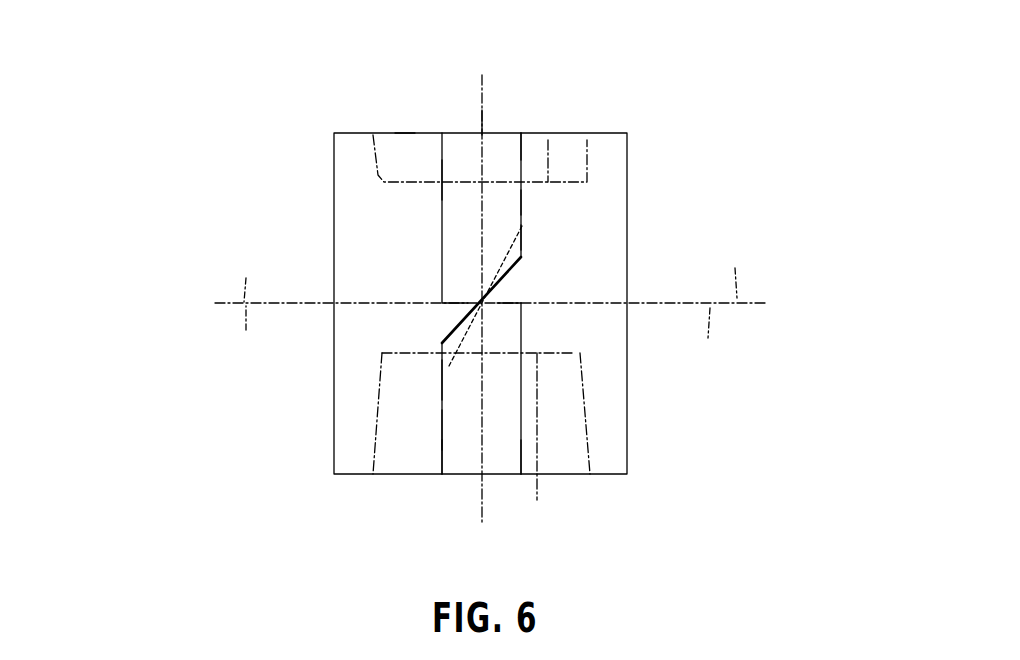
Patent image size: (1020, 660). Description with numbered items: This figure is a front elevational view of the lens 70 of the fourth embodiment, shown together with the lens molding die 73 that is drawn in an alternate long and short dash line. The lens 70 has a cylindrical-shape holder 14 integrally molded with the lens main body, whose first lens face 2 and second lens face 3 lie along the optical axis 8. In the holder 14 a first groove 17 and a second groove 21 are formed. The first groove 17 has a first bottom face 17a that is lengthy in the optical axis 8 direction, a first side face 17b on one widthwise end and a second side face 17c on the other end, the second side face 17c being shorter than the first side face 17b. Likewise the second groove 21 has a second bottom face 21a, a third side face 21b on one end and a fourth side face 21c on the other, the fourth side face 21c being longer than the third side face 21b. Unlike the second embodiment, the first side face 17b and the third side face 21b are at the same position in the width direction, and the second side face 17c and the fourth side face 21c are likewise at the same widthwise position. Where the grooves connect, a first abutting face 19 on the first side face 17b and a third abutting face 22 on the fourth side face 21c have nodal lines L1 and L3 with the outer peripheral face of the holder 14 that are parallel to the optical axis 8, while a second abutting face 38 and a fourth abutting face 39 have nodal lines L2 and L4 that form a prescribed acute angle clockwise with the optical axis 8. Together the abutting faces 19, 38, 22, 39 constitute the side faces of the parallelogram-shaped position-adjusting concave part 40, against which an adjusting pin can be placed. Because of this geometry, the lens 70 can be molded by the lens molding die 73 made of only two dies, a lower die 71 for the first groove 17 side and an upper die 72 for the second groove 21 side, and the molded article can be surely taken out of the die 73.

The lens 70 is at (317, 133).
The lens molding die 73 is at (222, 265).
The upper die 72 is at (480, 310).
The lower die 71 is at (494, 300).
The first groove 17 is at (489, 150).
The first bottom face 17a is at (511, 150).
The first side face 17b is at (522, 208).
The second side face 17c is at (443, 191).
The second groove 21 is at (462, 462).
The second bottom face 21a is at (442, 460).
The third side face 21b is at (521, 457).
The fourth side face 21c is at (443, 436).
The holder 14 is at (405, 133).
The optical axis 8 is at (479, 124).
The first lens face 2 is at (548, 126).
The second lens face 3 is at (540, 440).
The first abutting face 19 is at (522, 244).
The third abutting face 22 is at (443, 386).
The second abutting face 38 is at (522, 268).
The fourth abutting face 39 is at (442, 333).
The position-adjusting concave part 40 is at (503, 254).
The nodal line L1 is at (522, 255).
The nodal line L2 is at (500, 291).
The nodal line L3 is at (443, 370).
The nodal line L4 is at (455, 307).